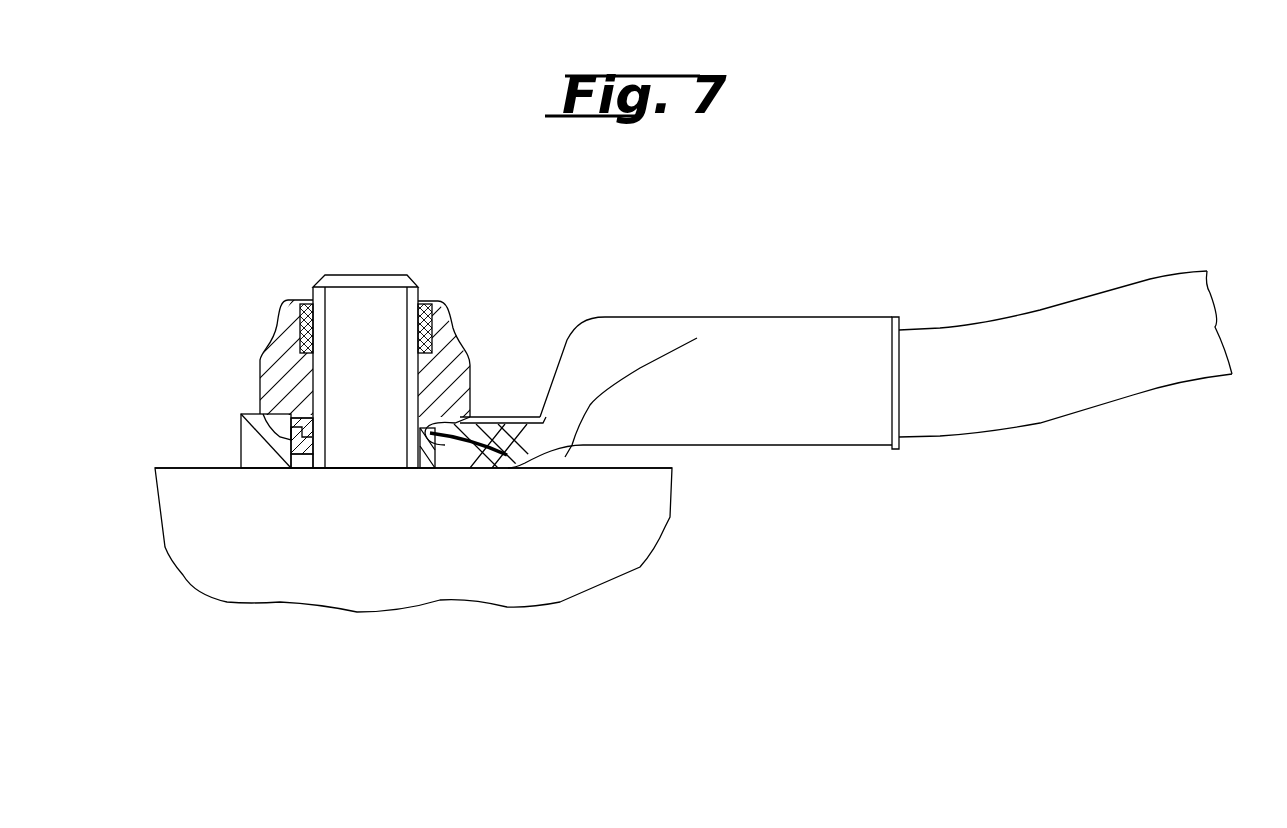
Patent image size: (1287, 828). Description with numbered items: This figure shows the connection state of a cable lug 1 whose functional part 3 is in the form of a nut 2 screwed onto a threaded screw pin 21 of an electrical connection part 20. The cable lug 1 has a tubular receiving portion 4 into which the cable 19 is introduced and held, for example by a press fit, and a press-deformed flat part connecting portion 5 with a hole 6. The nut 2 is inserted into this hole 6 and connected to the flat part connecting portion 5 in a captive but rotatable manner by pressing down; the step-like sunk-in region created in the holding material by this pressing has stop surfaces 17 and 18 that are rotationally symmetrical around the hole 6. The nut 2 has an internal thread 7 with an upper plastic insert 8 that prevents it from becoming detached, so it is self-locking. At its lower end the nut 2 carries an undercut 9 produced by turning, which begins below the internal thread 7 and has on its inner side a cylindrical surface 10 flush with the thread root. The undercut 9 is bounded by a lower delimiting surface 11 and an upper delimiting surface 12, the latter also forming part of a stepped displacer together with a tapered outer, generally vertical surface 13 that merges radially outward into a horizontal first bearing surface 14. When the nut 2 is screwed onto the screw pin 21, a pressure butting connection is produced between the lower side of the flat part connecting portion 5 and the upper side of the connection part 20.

The cable lug 1 is at (682, 266).
The nut 2 is at (443, 370).
The functional part 3 is at (265, 290).
The tubular receiving portion 4 is at (784, 403).
The flat part connecting portion 5 is at (252, 447).
The hole 6 is at (377, 462).
The internal thread 7 is at (457, 340).
The plastic insert 8 is at (310, 298).
The undercut 9 is at (505, 452).
The cylindrical surface 10 is at (388, 432).
The lower delimiting surface 11 is at (428, 440).
The upper delimiting surface 12 is at (452, 420).
The outer generally vertical surface 13 is at (532, 422).
The first bearing surface 14 is at (252, 432).
The stop surface 17 is at (290, 423).
The stop surface 18 is at (287, 422).
The cable 19 is at (1037, 385).
The connection part 20 is at (527, 540).
The screw pin 21 is at (373, 320).